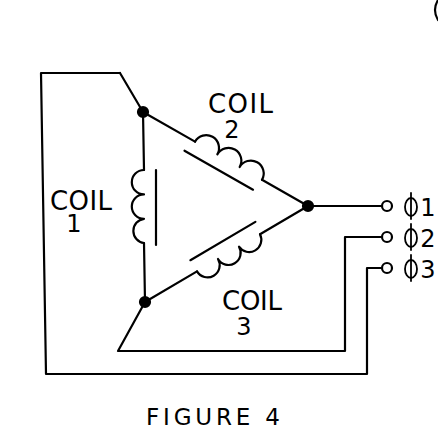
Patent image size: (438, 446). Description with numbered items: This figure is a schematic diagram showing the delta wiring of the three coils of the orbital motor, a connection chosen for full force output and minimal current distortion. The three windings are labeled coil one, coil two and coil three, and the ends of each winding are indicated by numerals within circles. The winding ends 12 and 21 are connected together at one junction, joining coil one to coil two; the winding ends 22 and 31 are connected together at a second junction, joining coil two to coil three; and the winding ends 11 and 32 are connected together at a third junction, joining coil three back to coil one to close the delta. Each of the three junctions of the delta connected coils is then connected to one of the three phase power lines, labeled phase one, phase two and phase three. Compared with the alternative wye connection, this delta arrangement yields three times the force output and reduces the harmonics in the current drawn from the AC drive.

The end of coil 1 winding 11 is at (119, 278).
The end of coil 1 winding 12 is at (117, 136).
The end of coil 2 winding 21 is at (158, 103).
The end of coil 2 winding 22 is at (298, 178).
The end of coil 3 winding 31 is at (298, 238).
The end of coil 3 winding 32 is at (174, 308).